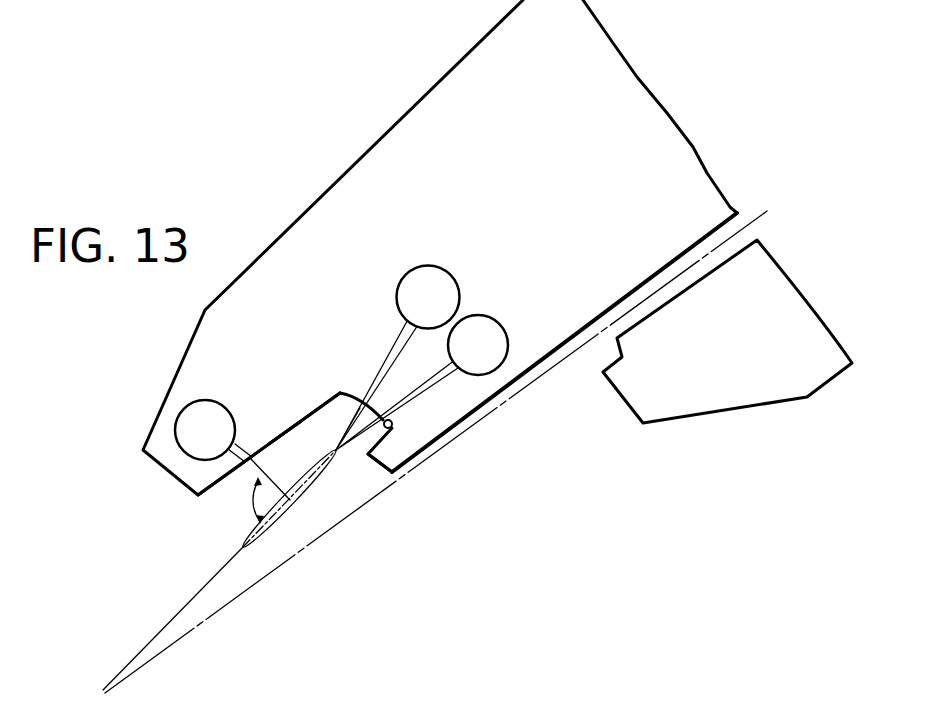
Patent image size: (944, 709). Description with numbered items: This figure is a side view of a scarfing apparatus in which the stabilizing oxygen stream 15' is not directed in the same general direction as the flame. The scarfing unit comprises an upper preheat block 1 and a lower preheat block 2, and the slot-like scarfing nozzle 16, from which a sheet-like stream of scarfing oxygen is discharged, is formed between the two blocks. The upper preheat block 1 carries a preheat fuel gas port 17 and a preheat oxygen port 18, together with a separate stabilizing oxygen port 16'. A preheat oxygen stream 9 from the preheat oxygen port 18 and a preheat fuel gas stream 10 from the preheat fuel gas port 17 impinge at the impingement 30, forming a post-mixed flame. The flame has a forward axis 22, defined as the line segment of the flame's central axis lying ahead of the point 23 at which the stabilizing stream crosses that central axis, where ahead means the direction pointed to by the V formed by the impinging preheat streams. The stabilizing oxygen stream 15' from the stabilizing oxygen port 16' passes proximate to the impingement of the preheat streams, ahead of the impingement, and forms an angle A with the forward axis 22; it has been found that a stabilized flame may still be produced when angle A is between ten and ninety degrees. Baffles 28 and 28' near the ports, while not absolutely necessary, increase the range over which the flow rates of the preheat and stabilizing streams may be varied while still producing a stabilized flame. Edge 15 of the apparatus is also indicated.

The upper preheat block 1 is at (378, 142).
The lower preheat block 2 is at (723, 408).
The preheat oxygen stream 9 is at (357, 440).
The preheat fuel gas stream 10 is at (327, 401).
The side edge 15 is at (564, 342).
The stabilizing oxygen stream 15' is at (278, 470).
The scarfing nozzle 16 is at (436, 452).
The stabilizing oxygen port 16' is at (216, 431).
The preheat fuel gas port 17 is at (357, 404).
The preheat oxygen port 18 is at (397, 425).
The forward axis 22 is at (197, 597).
The crossing point 23 is at (284, 513).
The baffle 28 is at (279, 422).
The baffle 28' is at (393, 484).
The impingement 30 is at (336, 453).
The angle A is at (250, 500).